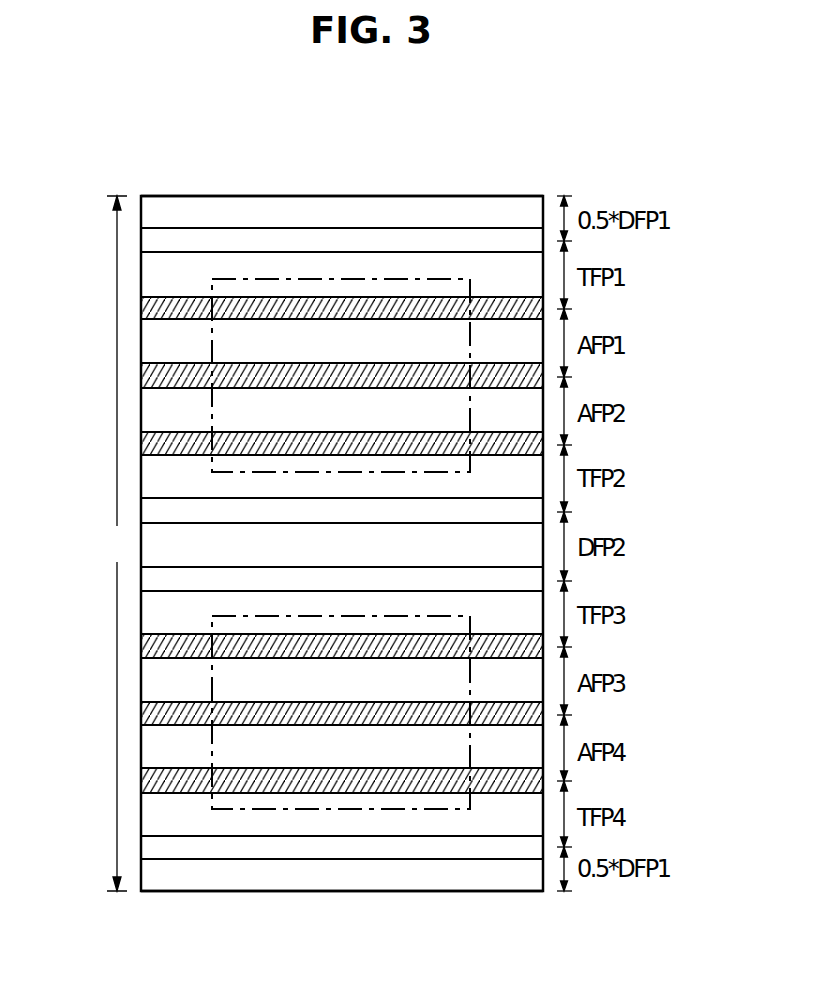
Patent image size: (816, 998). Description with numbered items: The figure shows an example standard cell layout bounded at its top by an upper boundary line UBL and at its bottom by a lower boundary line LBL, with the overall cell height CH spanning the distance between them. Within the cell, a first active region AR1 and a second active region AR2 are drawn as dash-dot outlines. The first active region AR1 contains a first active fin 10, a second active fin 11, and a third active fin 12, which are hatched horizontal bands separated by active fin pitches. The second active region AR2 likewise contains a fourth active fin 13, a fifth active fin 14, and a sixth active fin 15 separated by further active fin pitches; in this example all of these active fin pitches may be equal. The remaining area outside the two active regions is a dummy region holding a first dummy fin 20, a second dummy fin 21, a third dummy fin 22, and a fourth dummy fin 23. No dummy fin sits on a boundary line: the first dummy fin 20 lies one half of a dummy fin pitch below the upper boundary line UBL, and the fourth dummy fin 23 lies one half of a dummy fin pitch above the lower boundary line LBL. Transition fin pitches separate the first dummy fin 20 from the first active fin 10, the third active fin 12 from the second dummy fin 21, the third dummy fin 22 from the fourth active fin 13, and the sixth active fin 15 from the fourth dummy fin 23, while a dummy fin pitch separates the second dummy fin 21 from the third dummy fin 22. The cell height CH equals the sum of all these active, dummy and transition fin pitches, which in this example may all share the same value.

The first active fin 10 is at (150, 310).
The second active fin 11 is at (150, 376).
The third active fin 12 is at (150, 442).
The fourth active fin 13 is at (150, 646).
The fifth active fin 14 is at (150, 713).
The sixth active fin 15 is at (150, 780).
The first dummy fin 20 is at (150, 240).
The second dummy fin 21 is at (150, 509).
The third dummy fin 22 is at (150, 577).
The fourth dummy fin 23 is at (150, 847).
The first active region AR1 is at (362, 279).
The second active region AR2 is at (363, 809).
The upper boundary line UBL is at (472, 196).
The lower boundary line LBL is at (482, 891).
The cell height CH is at (112, 543).